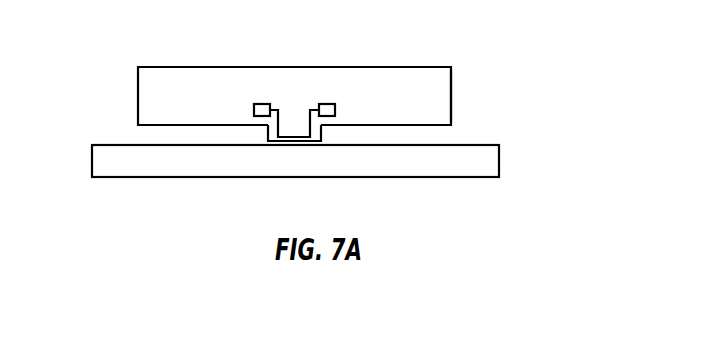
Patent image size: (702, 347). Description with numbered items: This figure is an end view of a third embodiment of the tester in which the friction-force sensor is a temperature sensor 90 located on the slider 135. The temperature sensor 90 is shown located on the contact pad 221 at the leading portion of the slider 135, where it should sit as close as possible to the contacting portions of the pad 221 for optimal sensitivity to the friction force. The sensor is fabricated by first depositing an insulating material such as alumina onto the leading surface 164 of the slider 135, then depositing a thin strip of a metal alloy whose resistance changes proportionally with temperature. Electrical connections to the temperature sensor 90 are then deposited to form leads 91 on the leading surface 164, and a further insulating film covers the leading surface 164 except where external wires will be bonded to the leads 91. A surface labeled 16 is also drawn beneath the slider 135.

The slider 135 is at (425, 68).
The leading surface 164 is at (435, 107).
The contact pad 221 is at (267, 136).
The temperature sensor 90 is at (297, 138).
The leads 91 is at (262, 103).
The substrate 16 is at (150, 170).